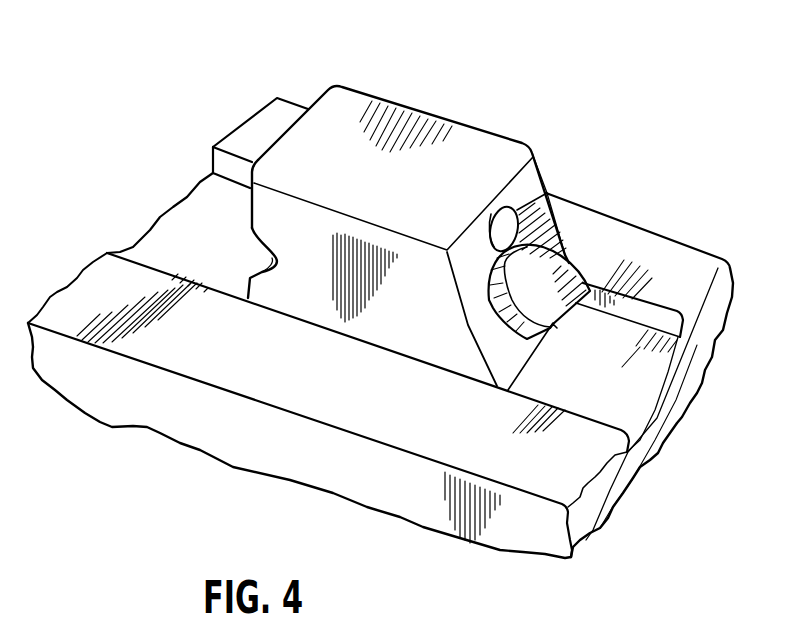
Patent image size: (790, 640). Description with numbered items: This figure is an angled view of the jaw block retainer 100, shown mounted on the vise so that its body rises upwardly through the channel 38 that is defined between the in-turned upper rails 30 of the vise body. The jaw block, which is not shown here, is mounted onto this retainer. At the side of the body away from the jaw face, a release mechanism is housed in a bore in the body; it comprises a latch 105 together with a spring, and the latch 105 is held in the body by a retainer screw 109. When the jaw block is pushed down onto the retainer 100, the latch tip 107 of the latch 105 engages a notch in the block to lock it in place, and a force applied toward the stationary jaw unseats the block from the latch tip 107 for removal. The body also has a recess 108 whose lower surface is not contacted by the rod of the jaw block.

The upper rails 30 is at (262, 125).
The channel 38 is at (168, 199).
The jaw block retainer 100 is at (435, 97).
The latch 105 is at (548, 267).
The latch tip 107 is at (557, 329).
The recess 108 is at (260, 270).
The retainer screw 109 is at (547, 194).